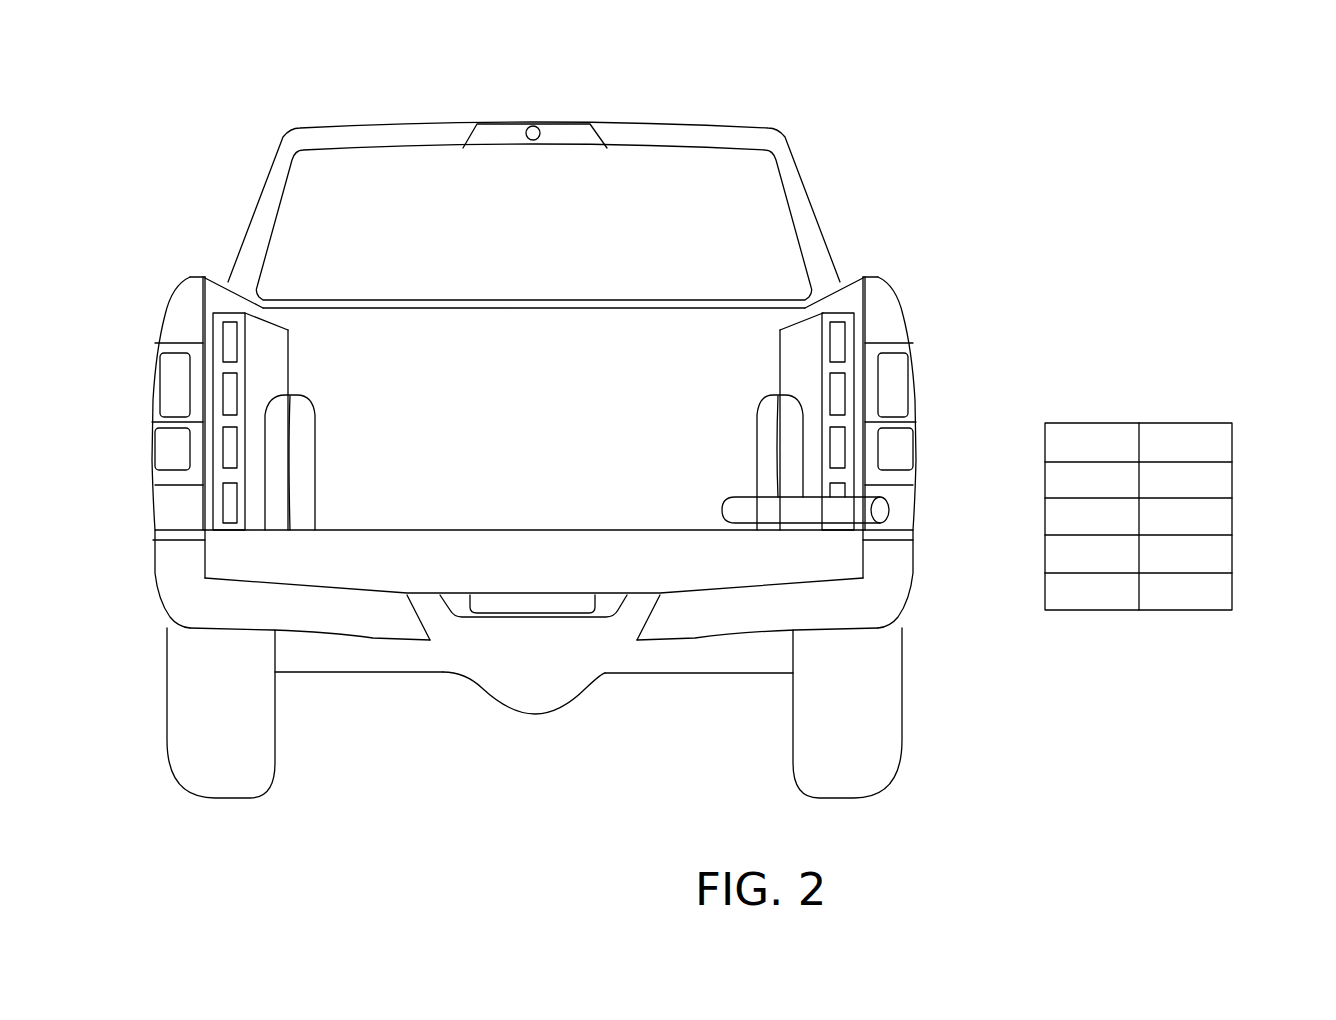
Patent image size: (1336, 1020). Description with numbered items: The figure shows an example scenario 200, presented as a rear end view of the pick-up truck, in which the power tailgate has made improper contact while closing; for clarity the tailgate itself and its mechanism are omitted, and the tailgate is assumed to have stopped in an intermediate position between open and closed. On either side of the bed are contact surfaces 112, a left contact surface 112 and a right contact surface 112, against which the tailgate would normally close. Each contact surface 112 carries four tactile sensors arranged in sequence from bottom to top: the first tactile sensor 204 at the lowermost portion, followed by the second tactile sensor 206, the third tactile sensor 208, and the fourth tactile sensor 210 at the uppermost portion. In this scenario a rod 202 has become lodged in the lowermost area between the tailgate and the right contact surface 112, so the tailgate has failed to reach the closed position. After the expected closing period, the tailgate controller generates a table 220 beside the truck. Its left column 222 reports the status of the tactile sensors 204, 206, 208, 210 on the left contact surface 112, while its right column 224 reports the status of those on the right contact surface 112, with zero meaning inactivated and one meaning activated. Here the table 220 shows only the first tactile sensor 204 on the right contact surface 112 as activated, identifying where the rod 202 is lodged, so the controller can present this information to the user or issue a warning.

The example scenario 200 is at (877, 130).
The contact surface 112 is at (230, 318).
The fourth tactile sensor 210 is at (232, 343).
The third tactile sensor 208 is at (232, 393).
The second tactile sensor 206 is at (232, 450).
The first tactile sensor 204 is at (232, 503).
The rod 202 is at (884, 508).
The table 220 is at (1186, 422).
The left column 222 is at (1057, 442).
The right column 224 is at (1222, 442).